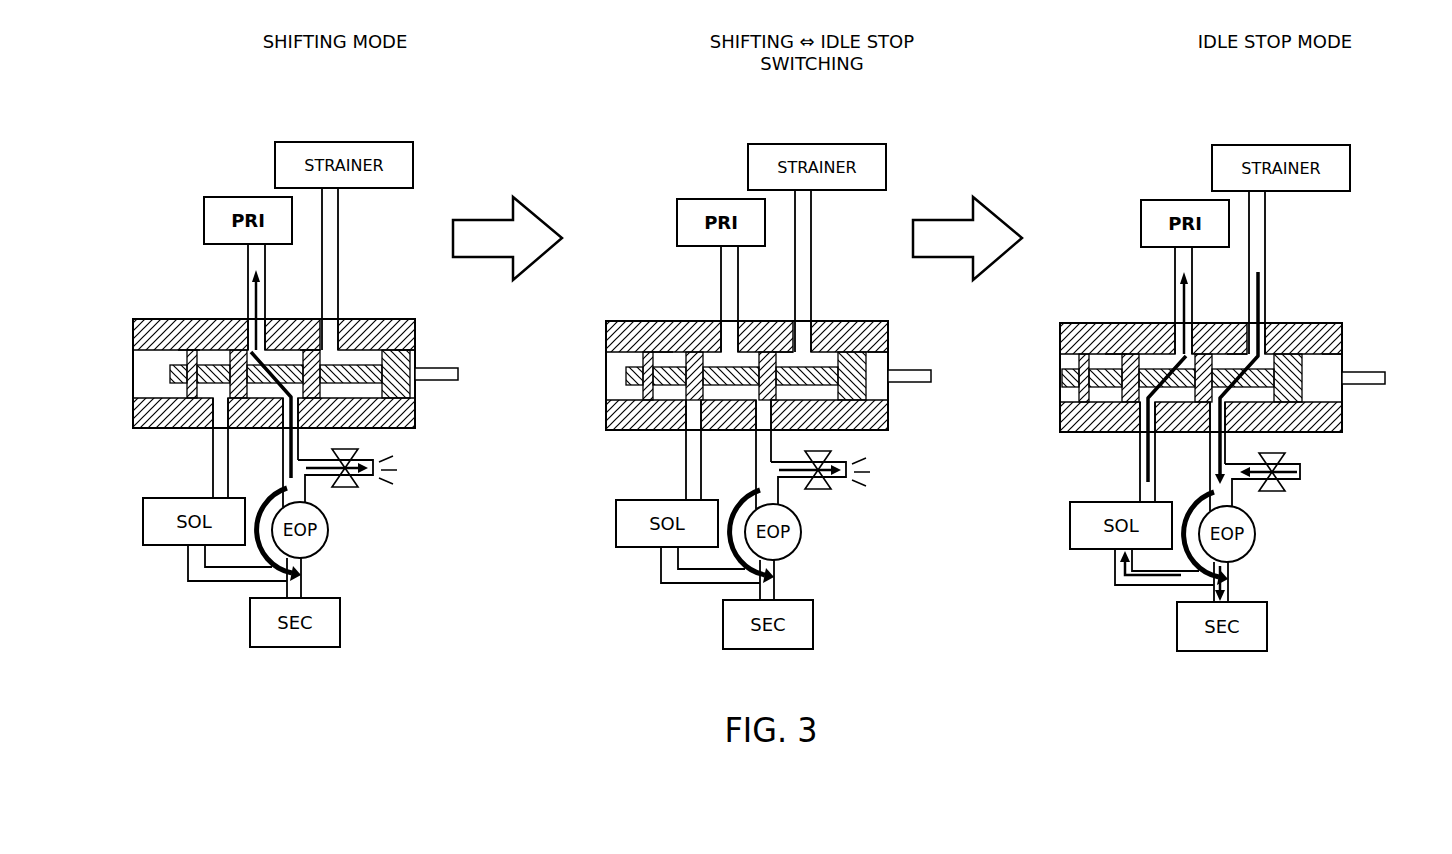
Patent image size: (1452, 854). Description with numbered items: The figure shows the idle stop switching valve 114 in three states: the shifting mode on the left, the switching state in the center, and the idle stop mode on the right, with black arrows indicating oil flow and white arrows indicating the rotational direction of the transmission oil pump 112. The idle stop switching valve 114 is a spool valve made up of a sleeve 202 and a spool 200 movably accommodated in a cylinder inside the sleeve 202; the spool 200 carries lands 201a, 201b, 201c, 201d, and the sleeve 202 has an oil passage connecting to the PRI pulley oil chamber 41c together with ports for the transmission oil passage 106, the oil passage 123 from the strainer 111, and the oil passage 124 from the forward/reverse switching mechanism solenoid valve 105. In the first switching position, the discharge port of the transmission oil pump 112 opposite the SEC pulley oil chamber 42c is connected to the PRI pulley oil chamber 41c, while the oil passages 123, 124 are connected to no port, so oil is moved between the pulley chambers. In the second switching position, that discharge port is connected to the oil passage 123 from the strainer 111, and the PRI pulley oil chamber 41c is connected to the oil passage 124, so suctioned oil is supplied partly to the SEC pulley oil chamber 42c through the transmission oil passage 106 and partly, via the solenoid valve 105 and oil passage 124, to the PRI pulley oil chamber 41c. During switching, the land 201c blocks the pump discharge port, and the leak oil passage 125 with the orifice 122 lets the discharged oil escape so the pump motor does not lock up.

The strainer 111 is at (832, 145).
The PRI pulley oil chamber 41c is at (702, 195).
The oil passage 123 is at (835, 271).
The idle stop switching valve 114 is at (792, 375).
The sleeve 202 is at (718, 351).
The spool 200 is at (731, 377).
The land 201a is at (642, 312).
The land 201b is at (697, 299).
The land 201c is at (765, 318).
The land 201d is at (872, 314).
The oil passage 124 is at (646, 450).
The forward/reverse switching mechanism solenoid valve 105 is at (646, 523).
The transmission oil pump 112 is at (800, 491).
The leak oil passage 125 is at (799, 493).
The orifice 122 is at (858, 460).
The transmission oil passage 106 is at (804, 580).
The SEC pulley oil chamber 42c is at (801, 624).